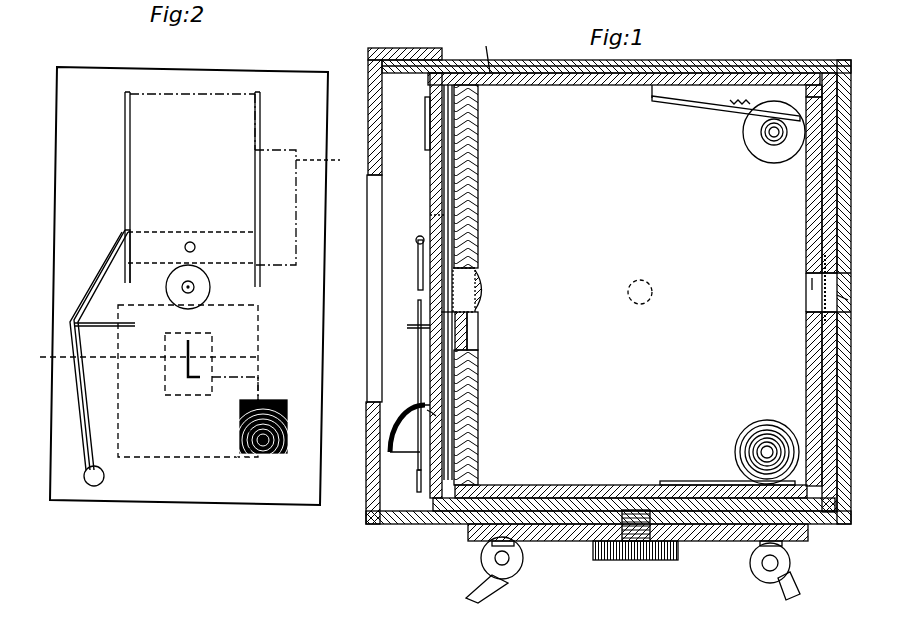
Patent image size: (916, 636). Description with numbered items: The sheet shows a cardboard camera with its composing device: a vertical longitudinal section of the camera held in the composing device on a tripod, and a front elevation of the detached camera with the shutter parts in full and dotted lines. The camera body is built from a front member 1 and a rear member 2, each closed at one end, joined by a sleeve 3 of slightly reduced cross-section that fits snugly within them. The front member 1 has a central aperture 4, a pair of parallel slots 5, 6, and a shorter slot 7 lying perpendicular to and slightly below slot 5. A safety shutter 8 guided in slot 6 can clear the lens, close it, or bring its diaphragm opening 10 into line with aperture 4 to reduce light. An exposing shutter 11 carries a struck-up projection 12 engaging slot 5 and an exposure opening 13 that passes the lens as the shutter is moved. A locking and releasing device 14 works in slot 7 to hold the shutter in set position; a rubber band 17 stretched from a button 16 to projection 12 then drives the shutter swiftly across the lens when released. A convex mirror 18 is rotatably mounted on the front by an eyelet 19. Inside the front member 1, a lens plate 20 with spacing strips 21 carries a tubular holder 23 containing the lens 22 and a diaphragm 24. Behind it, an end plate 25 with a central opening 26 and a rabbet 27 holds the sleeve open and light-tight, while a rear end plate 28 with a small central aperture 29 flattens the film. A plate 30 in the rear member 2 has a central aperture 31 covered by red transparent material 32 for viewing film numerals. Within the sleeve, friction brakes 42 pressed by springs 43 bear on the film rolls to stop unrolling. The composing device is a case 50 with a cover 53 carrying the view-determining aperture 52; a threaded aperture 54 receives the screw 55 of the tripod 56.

In FIG. 2, the front member 1 is at (186, 44).
In FIG. 1, the front member 1 is at (485, 51).
In FIG. 1, the rear member 2 is at (806, 72).
In FIG. 1, the sleeve 3 is at (440, 287).
In FIG. 2, the central aperture 4 is at (210, 287).
In FIG. 1, the central aperture 4 is at (430, 300).
In FIG. 2, the slot 5 is at (125, 152).
In FIG. 1, the slot 5 is at (849, 310).
In FIG. 2, the slot 6 is at (255, 185).
In FIG. 2, the shorter slot 7 is at (120, 326).
In FIG. 2, the safety shutter 8 is at (323, 165).
In FIG. 1, the safety shutter 8 is at (430, 178).
In FIG. 2, the diaphragm opening 10 is at (193, 240).
In FIG. 1, the diaphragm opening 10 is at (430, 215).
In FIG. 2, the exposing shutter 11 is at (118, 380).
In FIG. 1, the exposing shutter 11 is at (452, 306).
In FIG. 1, the struck-up projection 12 is at (416, 250).
In FIG. 2, the exposure opening 13 is at (180, 395).
In FIG. 2, the locking and releasing device 14 is at (258, 325).
In FIG. 1, the locking and releasing device 14 is at (441, 325).
In FIG. 2, the button 16 is at (94, 486).
In FIG. 1, the button 16 is at (417, 482).
In FIG. 2, the rubber band 17 is at (86, 432).
In FIG. 1, the rubber band 17 is at (418, 365).
In FIG. 2, the convex mirror 18 is at (287, 405).
In FIG. 1, the convex mirror 18 is at (390, 445).
In FIG. 2, the eyelet 19 is at (270, 455).
In FIG. 1, the eyelet 19 is at (436, 416).
In FIG. 1, the lens plate 20 is at (478, 183).
In FIG. 1, the spacing strips 21 is at (448, 148).
In FIG. 1, the lens 22 is at (483, 295).
In FIG. 1, the tubular holder 23 is at (470, 262).
In FIG. 1, the diaphragm 24 is at (476, 275).
In FIG. 1, the end plate 25 is at (478, 372).
In FIG. 1, the central opening 26 is at (470, 340).
In FIG. 1, the rabbet 27 is at (500, 87).
In FIG. 1, the rear end plate 28 is at (822, 247).
In FIG. 1, the small central aperture 29 is at (806, 285).
In FIG. 1, the plate 30 is at (848, 200).
In FIG. 1, the central aperture 31 is at (812, 272).
In FIG. 1, the transparent material 32 is at (822, 305).
In FIG. 1, the friction brakes 42 is at (738, 112).
In FIG. 1, the springs 43 is at (748, 96).
In FIG. 1, the case 50 is at (518, 58).
In FIG. 1, the view-determining aperture 52 is at (367, 225).
In FIG. 1, the cover 53 is at (420, 48).
In FIG. 1, the threaded aperture 54 is at (650, 285).
In FIG. 1, the screw 55 is at (615, 560).
In FIG. 1, the tripod 56 is at (468, 534).